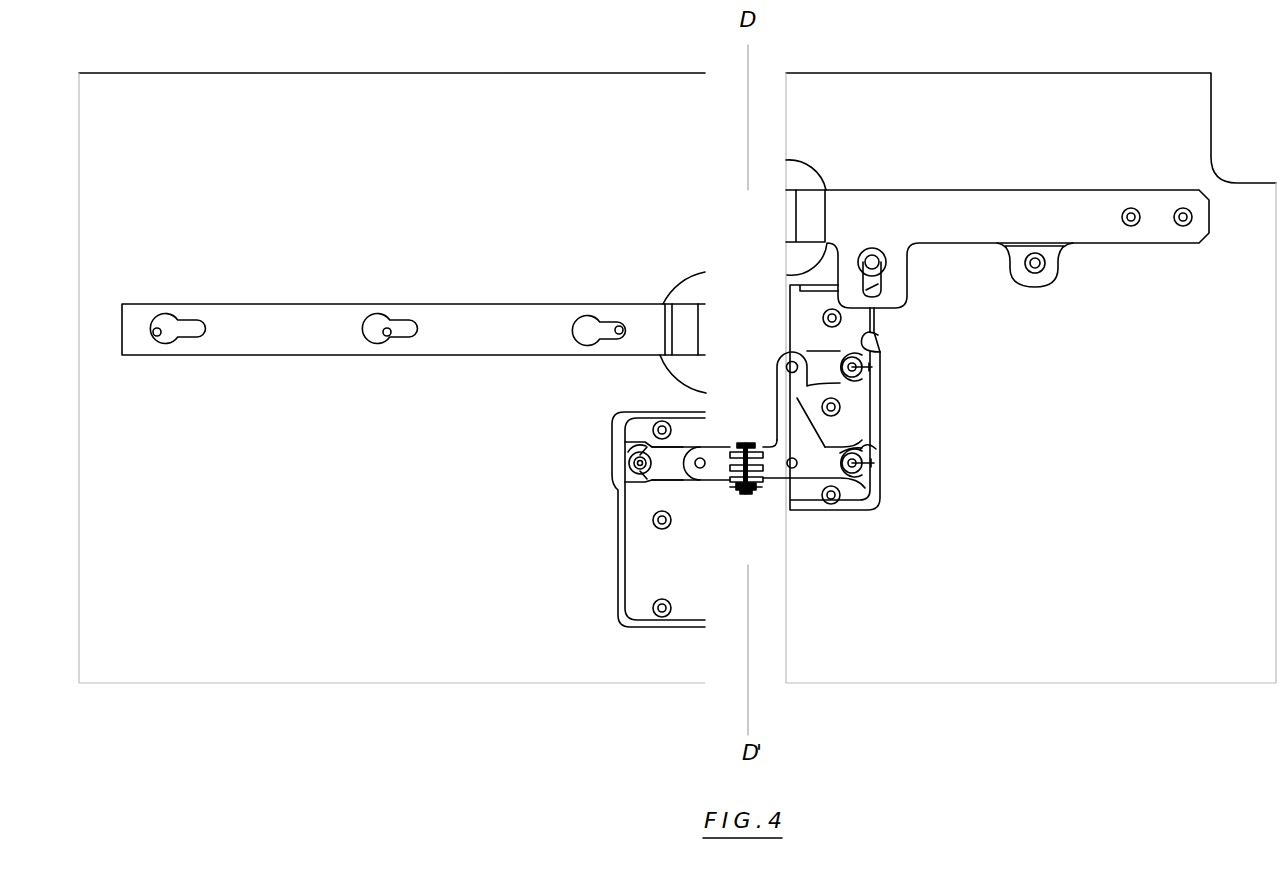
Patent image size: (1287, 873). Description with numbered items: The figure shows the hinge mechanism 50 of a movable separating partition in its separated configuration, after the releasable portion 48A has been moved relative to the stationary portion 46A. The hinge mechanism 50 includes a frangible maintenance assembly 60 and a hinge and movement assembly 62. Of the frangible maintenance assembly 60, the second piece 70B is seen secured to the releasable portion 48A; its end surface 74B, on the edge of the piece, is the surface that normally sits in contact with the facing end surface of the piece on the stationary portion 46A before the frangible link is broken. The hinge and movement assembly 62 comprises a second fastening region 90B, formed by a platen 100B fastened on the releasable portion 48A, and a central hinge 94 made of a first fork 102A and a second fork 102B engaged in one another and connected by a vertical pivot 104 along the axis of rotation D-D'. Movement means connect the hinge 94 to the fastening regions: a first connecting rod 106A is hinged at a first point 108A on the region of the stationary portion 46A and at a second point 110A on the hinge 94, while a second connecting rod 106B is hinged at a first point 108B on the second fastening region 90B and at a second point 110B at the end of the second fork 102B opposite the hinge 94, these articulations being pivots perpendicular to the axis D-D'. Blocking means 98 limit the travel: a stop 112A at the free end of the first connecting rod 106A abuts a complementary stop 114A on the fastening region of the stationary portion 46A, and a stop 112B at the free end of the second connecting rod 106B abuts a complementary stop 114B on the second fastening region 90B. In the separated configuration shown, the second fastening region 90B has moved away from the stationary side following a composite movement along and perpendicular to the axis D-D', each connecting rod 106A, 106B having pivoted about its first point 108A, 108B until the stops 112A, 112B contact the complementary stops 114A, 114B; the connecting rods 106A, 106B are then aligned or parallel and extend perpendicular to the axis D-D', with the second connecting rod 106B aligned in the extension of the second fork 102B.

The stationary portion 46A is at (1031, 378).
The releasable portion 48A is at (392, 378).
The hinge mechanism 50 is at (1136, 488).
The frangible maintenance assembly 60 is at (453, 376).
The hinge and movement assembly 62 is at (1118, 390).
The second piece 70B is at (318, 335).
The end surface 74B is at (712, 330).
The second fastening region 90B is at (598, 548).
The central hinge 94 is at (920, 430).
The blocking means 98 is at (614, 437).
The platen 100B is at (642, 586).
The first fork 102A is at (773, 480).
The second fork 102B is at (718, 445).
The pivot pin 104 is at (745, 442).
The first connecting rod 106A is at (780, 379).
The second connecting rod 106B is at (667, 465).
The first point 108A is at (862, 468).
The first point 108B is at (636, 470).
The second point 110A is at (789, 358).
The second point 110B is at (698, 457).
The stop 112A is at (866, 377).
The stop 112B is at (636, 452).
The complementary stop 114A is at (868, 345).
The complementary stop 114B is at (630, 457).